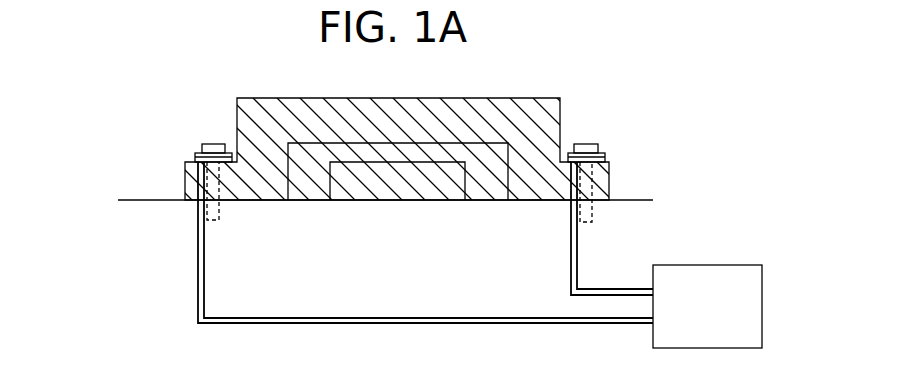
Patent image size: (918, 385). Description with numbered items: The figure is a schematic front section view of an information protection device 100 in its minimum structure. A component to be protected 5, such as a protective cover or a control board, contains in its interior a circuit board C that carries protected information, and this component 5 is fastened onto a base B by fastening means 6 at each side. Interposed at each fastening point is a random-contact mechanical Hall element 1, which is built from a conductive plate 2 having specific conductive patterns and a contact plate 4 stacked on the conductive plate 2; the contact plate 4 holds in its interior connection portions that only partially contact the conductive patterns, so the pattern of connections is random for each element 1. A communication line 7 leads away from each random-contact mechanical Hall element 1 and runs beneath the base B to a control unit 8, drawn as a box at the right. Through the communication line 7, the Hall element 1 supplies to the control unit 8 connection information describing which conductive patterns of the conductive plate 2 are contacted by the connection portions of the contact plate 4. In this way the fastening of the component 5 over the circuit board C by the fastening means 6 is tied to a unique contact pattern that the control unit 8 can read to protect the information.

The information protection device 100 is at (636, 64).
The random-contact mechanical Hall element 1 is at (401, 128).
The conductive plate 2 is at (197, 155).
The contact plate 4 is at (197, 160).
The component to be protected 5 is at (535, 98).
The fastening means 6 is at (216, 143).
The communication line 7 is at (288, 323).
The control unit 8 is at (732, 265).
The base B is at (133, 200).
The circuit board C is at (420, 200).